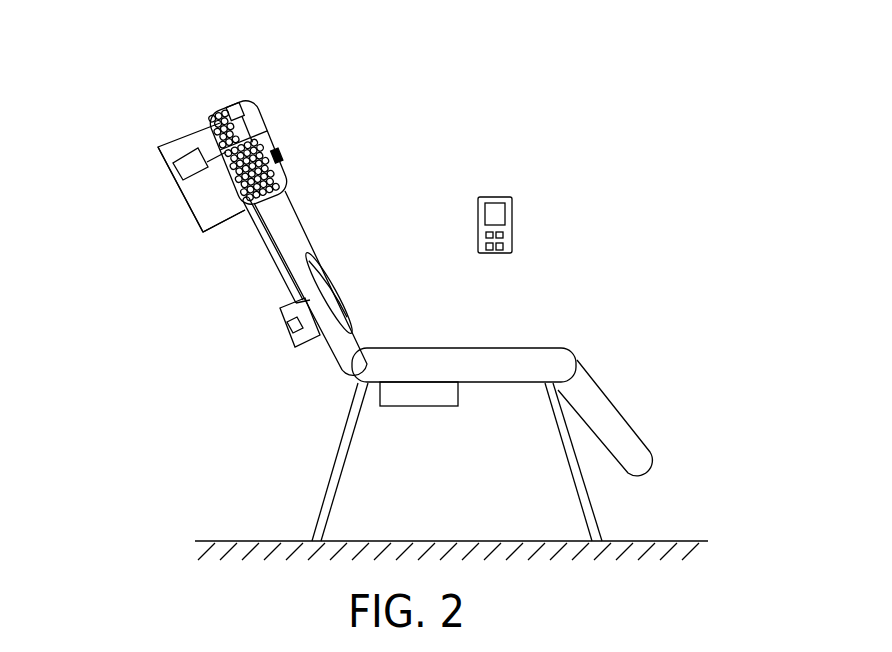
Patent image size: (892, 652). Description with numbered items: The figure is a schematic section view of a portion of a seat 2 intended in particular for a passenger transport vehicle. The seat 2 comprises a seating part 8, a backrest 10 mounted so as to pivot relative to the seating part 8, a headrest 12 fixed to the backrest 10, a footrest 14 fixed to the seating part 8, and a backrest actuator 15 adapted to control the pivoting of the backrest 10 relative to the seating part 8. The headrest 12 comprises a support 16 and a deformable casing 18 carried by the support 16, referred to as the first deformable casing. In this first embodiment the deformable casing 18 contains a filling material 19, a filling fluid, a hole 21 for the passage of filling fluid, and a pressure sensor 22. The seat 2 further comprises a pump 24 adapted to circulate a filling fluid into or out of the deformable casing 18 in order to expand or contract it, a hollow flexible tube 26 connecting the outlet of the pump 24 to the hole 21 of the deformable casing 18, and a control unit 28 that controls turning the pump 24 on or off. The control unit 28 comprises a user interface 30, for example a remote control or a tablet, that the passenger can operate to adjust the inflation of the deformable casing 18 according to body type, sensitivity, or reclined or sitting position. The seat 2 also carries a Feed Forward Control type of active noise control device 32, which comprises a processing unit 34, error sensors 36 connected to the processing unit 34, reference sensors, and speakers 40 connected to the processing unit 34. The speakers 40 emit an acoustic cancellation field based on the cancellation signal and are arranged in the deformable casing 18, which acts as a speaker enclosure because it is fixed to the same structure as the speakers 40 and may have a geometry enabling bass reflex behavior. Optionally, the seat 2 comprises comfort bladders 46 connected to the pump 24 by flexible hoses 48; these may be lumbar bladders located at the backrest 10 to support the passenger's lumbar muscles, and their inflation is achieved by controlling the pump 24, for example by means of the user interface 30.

The seat 2 is at (722, 213).
The seating part 8 is at (510, 373).
The backrest 10 is at (303, 233).
The headrest 12 is at (292, 173).
The footrest 14 is at (630, 420).
The backrest actuator 15 is at (420, 408).
The support 16 is at (214, 119).
The deformable casing 18 is at (219, 112).
The filling material 19 is at (223, 110).
The hole 21 is at (240, 190).
The pressure sensor 22 is at (246, 101).
The pump 24 is at (288, 322).
The hollow flexible tube 26 is at (260, 250).
The control unit 28 is at (517, 189).
The user interface 30 is at (500, 197).
The active noise control device 32 is at (137, 215).
The processing unit 34 is at (158, 147).
The error sensors 36 is at (280, 157).
The speakers 40 is at (247, 130).
The comfort bladders 46 is at (333, 288).
The flexible hoses 48 is at (308, 302).